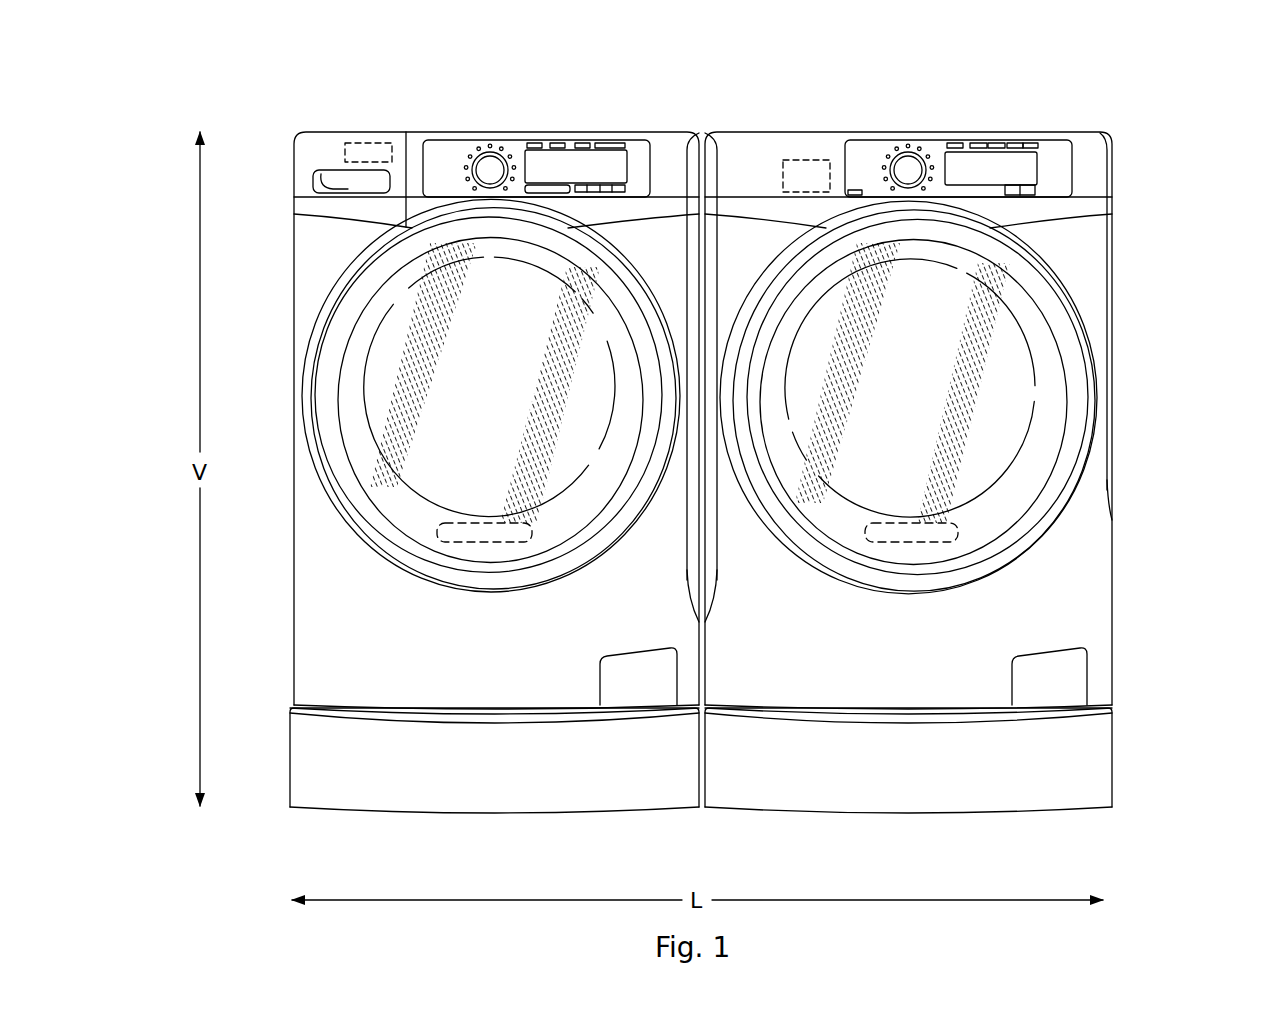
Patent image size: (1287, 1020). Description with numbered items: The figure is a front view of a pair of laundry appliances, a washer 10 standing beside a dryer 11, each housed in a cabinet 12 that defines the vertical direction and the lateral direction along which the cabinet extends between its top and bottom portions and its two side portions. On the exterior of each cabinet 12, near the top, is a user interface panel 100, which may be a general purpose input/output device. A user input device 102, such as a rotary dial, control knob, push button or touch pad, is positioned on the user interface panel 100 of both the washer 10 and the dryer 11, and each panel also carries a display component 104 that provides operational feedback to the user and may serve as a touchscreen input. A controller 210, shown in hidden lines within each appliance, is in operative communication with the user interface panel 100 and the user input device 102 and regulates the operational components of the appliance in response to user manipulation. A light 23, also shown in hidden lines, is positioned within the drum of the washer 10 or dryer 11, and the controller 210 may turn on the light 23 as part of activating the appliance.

The appliance 10 is at (265, 125).
The dryer 11 is at (1138, 152).
The cabinet 12 is at (318, 597).
The light 23 is at (482, 541).
The user interface panel 100 is at (737, 118).
The user input device 102 is at (484, 165).
The display component 104 is at (600, 160).
The controller 210 is at (373, 143).